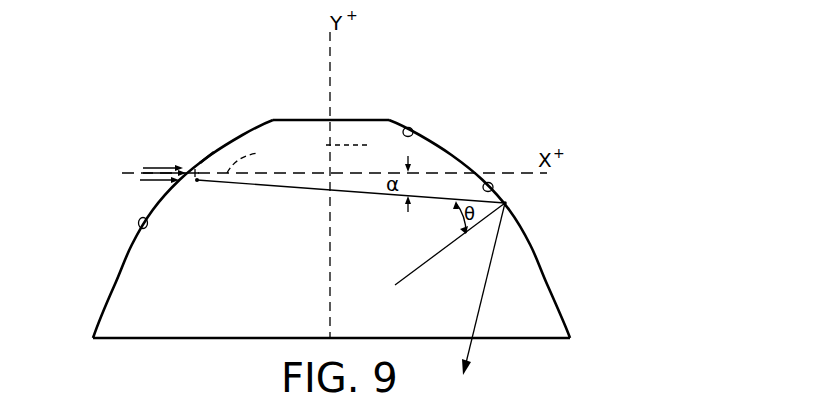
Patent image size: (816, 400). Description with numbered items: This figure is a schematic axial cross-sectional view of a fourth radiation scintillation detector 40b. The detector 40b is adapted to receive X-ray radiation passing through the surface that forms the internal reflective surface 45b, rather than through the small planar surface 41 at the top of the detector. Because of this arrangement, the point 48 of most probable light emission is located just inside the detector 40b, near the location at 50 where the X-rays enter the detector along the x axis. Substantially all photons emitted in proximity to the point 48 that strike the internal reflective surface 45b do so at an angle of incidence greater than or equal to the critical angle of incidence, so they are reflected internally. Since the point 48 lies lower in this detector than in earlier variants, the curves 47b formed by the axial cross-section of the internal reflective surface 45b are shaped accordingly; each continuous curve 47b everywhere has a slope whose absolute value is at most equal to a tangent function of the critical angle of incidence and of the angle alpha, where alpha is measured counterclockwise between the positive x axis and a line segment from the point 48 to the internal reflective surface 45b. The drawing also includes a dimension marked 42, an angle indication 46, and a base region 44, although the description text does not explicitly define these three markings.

The fourth radiation scintillation detector 40b is at (461, 143).
The small planar surface 41 is at (288, 120).
The offset distance 42 is at (368, 175).
The base 44 is at (238, 338).
The internal reflective surface 45b is at (413, 130).
The angle 46 is at (258, 157).
The curves 47b is at (160, 202).
The point of most probable light emission 48 is at (206, 156).
The location where the X-rays are received 50 is at (187, 168).